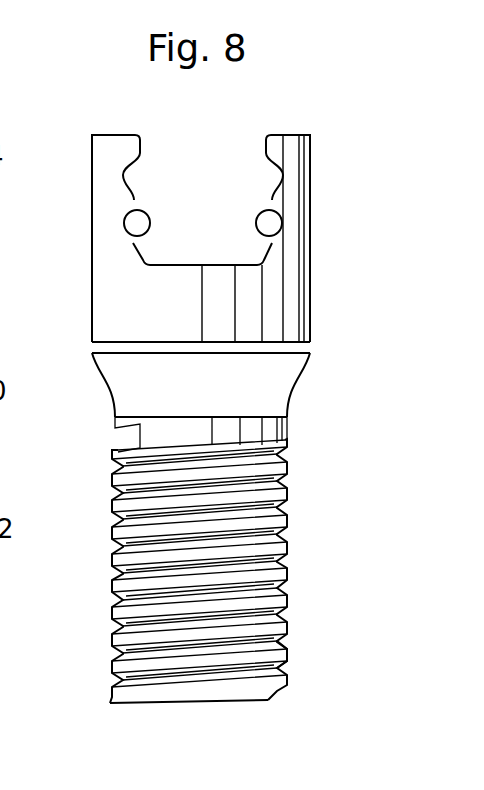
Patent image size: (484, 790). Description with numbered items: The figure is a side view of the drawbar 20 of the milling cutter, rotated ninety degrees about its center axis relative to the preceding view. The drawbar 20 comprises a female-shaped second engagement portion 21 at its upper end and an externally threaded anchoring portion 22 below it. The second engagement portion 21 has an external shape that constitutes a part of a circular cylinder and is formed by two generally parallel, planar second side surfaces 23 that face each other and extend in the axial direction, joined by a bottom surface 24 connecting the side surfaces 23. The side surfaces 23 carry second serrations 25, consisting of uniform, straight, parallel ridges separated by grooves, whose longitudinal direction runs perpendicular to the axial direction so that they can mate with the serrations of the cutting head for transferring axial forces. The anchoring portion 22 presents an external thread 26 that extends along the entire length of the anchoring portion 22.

The drawbar 20 is at (308, 400).
The second engagement portion 21 is at (326, 258).
The anchoring portion 22 is at (295, 538).
The second side surfaces 23 is at (137, 192).
The bottom surface 24 is at (204, 250).
The second serrations 25 is at (272, 232).
The external thread 26 is at (283, 652).